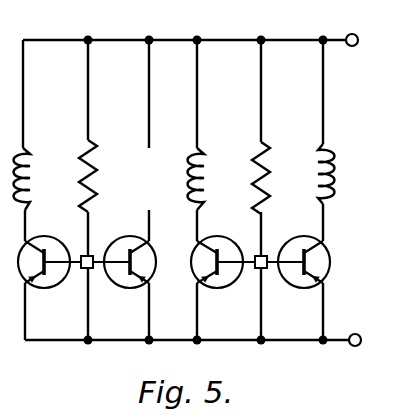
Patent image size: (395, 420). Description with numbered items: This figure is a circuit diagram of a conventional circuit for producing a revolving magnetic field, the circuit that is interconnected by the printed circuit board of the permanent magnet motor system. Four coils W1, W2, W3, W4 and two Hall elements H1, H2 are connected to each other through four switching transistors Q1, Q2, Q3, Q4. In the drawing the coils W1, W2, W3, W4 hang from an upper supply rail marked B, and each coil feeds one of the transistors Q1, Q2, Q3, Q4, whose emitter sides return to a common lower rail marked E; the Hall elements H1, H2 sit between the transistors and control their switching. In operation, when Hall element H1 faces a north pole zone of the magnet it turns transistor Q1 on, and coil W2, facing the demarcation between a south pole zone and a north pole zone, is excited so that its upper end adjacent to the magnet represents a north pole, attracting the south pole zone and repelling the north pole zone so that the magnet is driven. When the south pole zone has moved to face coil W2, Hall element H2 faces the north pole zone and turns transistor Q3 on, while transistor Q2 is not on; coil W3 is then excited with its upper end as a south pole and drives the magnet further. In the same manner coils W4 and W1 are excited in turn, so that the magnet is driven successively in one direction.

The coil W1 is at (320, 183).
The coil W2 is at (30, 185).
The coil W3 is at (207, 182).
The coil W4 is at (143, 172).
The Hall element H1 is at (92, 256).
The Hall element H2 is at (266, 256).
The switching transistor Q1 is at (297, 282).
The switching transistor Q2 is at (58, 282).
The switching transistor Q3 is at (225, 282).
The switching transistor Q4 is at (122, 283).
The positive supply terminal + B is at (345, 27).
The ground terminal E is at (353, 354).